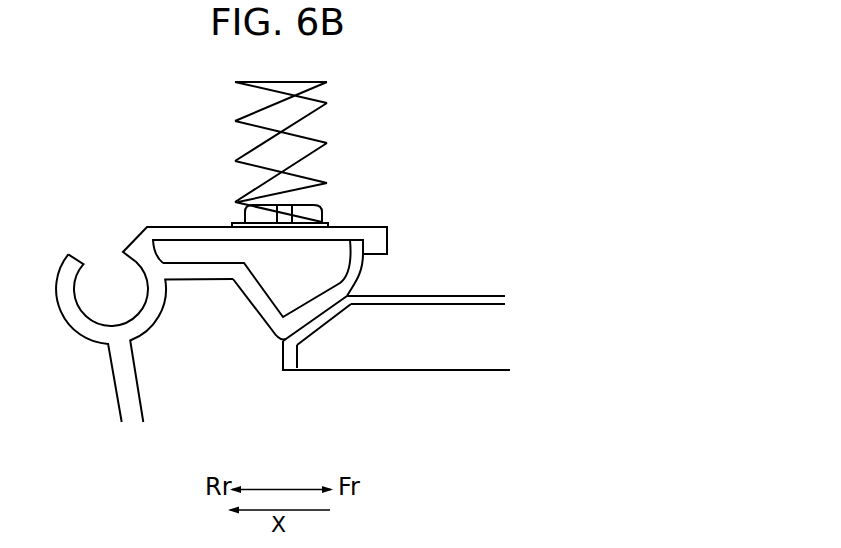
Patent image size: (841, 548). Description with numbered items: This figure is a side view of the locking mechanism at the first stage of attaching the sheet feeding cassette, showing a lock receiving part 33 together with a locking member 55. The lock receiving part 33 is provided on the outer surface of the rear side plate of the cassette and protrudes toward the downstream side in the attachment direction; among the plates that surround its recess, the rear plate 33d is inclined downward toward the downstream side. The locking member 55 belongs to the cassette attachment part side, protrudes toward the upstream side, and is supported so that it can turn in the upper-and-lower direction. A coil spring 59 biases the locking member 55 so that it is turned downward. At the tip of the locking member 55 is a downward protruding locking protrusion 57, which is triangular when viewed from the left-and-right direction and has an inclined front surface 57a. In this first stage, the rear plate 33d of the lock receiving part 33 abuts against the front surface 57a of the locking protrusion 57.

The lock receiving part 33 is at (468, 297).
The rear plate 33d is at (332, 299).
The locking member 55 is at (369, 227).
The locking protrusion 57 is at (288, 292).
The front surface 57a is at (308, 337).
The coil spring 59 is at (252, 165).